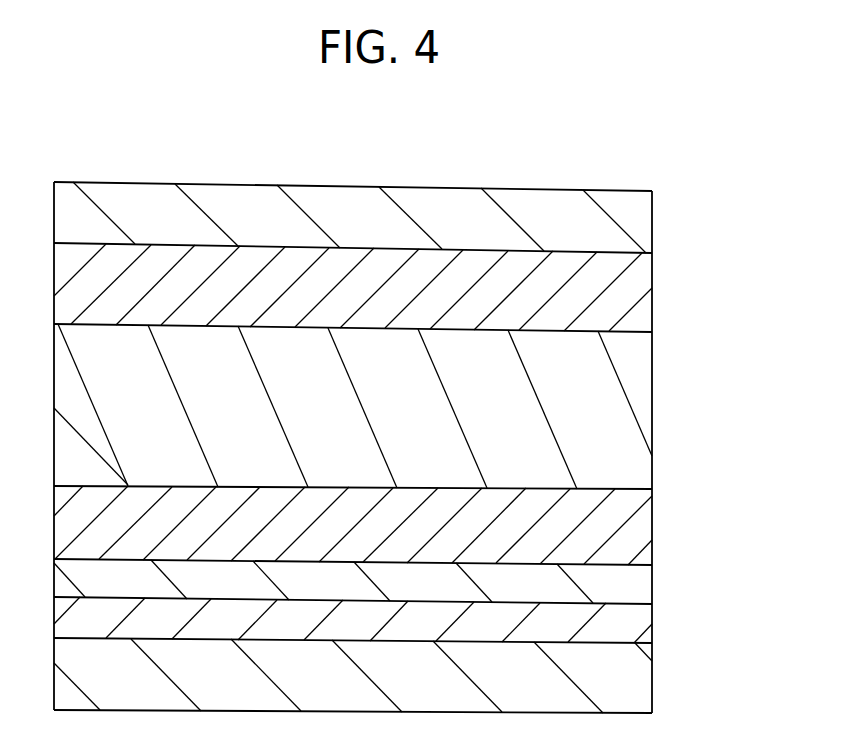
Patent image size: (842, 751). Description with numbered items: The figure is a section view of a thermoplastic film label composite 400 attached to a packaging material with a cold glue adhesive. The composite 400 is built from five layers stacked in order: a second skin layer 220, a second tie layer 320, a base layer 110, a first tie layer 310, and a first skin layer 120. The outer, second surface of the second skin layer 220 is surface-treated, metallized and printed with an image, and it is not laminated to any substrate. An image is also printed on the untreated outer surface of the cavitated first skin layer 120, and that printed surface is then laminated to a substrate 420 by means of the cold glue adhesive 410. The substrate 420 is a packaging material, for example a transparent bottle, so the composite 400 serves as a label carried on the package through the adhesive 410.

The film label composite 400 is at (804, 478).
The second skin layer 220 is at (640, 235).
The second tie layer 320 is at (638, 295).
The base layer 110 is at (640, 415).
The first tie layer 310 is at (640, 535).
The first skin layer 120 is at (640, 590).
The cold glue adhesive 410 is at (640, 628).
The substrate 420 is at (634, 686).